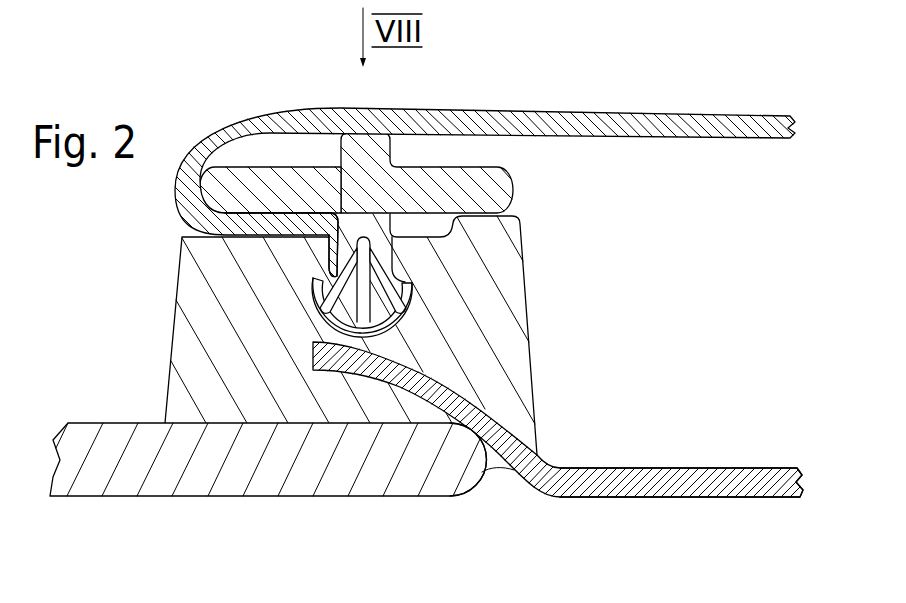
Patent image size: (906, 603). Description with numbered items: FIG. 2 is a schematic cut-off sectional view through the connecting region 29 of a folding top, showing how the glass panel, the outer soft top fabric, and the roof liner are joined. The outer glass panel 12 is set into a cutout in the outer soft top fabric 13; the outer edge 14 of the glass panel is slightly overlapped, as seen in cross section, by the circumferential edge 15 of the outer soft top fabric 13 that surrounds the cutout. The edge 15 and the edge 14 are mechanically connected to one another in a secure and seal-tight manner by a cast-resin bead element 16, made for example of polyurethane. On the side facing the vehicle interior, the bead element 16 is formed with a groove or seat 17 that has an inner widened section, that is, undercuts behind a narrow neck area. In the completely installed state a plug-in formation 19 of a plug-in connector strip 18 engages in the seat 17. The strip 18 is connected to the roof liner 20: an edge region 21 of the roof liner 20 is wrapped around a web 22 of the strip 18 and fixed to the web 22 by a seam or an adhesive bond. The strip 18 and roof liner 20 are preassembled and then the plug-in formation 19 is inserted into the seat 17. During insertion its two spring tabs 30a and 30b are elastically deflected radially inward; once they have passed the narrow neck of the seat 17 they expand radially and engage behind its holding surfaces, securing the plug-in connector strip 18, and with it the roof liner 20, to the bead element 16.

The glass panel 12 is at (137, 470).
The outer soft top fabric 13 is at (696, 472).
The outer edge of the glass panel 14 is at (418, 470).
The circumferential edge of the outer soft top fabric 15 is at (410, 373).
The cast-resin bead element 16 is at (212, 324).
The seat 17 is at (425, 296).
The plug-in connector strip 18 is at (453, 190).
The plug-in formation 19 is at (332, 278).
The roof liner 20 is at (607, 124).
The edge region of the roof liner 21 is at (240, 218).
The web 22 is at (258, 178).
The connecting region 29 is at (648, 270).
The spring tab 30a is at (317, 275).
The spring tab 30b is at (413, 297).